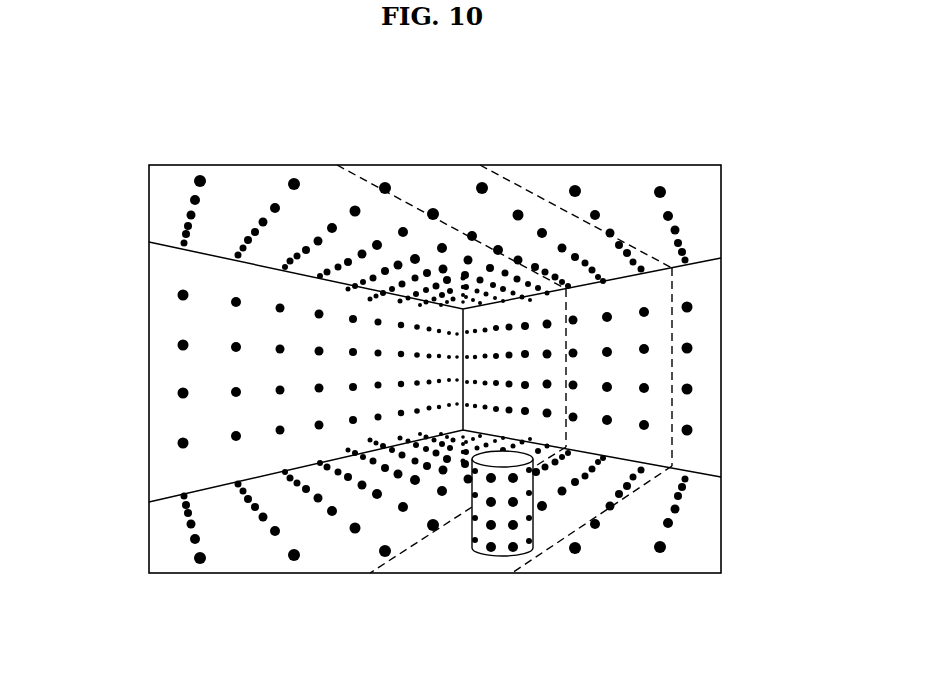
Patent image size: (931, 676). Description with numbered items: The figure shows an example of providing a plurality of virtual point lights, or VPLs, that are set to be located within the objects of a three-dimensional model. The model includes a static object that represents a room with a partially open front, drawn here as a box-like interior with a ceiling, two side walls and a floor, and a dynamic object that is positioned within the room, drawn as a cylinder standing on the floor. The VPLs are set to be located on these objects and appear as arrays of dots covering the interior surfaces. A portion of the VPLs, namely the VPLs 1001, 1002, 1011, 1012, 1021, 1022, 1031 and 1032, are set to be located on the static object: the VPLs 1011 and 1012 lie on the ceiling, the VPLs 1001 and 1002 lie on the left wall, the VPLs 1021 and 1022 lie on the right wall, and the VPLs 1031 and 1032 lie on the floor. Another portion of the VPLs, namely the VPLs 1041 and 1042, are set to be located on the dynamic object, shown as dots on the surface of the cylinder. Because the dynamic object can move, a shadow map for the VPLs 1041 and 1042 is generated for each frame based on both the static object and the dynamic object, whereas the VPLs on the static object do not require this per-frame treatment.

The VPL 1011 is at (541, 230).
The VPL 1012 is at (184, 233).
The VPL 1001 is at (182, 293).
The VPL 1002 is at (234, 305).
The VPL 1021 is at (608, 349).
The VPL 1022 is at (688, 388).
The VPL 1031 is at (562, 490).
The VPL 1032 is at (660, 545).
The VPL 1041 is at (491, 525).
The VPL 1042 is at (533, 526).